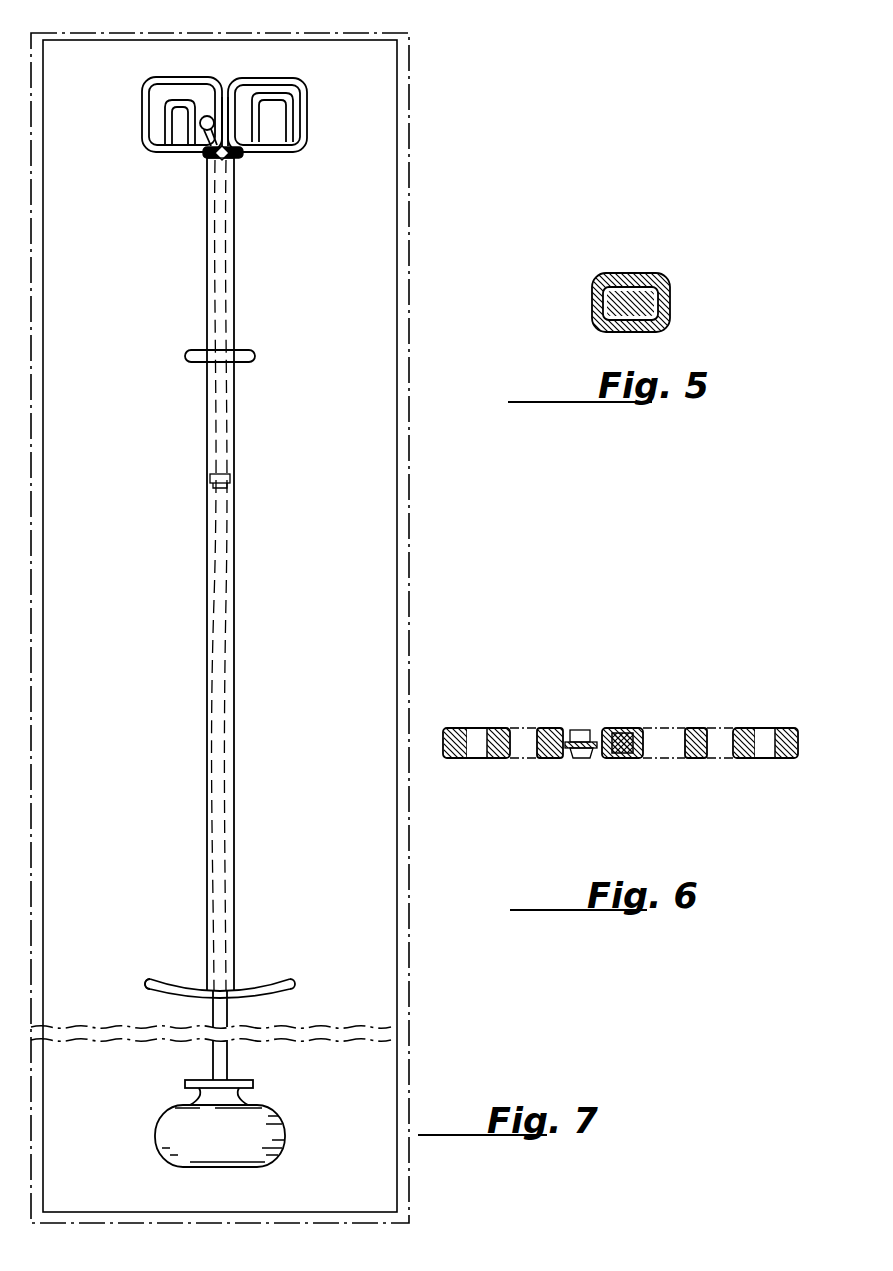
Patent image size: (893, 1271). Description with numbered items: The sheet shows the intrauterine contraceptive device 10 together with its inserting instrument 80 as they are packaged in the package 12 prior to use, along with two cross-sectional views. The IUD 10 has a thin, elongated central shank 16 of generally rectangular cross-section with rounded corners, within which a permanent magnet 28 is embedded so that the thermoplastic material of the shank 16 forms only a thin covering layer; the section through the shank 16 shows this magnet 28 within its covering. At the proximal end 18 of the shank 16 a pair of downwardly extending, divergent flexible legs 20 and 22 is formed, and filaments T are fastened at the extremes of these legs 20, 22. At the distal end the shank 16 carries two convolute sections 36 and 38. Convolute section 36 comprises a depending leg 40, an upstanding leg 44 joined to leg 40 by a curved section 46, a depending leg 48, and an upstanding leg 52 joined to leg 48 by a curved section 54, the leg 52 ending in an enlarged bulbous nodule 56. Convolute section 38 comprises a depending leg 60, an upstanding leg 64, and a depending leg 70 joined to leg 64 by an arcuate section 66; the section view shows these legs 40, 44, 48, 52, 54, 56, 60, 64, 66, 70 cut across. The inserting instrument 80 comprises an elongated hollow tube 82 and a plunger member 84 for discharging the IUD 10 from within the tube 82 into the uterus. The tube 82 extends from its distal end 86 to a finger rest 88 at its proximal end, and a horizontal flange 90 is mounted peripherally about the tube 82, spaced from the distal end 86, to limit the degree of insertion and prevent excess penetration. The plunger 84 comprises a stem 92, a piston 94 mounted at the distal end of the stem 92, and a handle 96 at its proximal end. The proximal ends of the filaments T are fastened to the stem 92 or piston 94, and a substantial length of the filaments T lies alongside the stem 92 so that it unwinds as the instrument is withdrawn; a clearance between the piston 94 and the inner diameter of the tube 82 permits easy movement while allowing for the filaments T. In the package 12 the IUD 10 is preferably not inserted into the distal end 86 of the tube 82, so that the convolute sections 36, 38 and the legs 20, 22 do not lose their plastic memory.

In FIG. 7, the intrauterine contraceptive device 10 is at (236, 117).
In FIG. 7, the package 12 is at (404, 567).
In FIG. 7, the shank 16 is at (223, 118).
In FIG. 6, the shank 16 is at (632, 752).
In FIG. 7, the proximal end 18 is at (228, 133).
In FIG. 7, the leg 20 is at (236, 151).
In FIG. 7, the leg 22 is at (215, 148).
In FIG. 6, the permanent magnet 28 is at (623, 737).
In FIG. 7, the convolute section 36 is at (140, 119).
In FIG. 6, the convolute section 36 is at (475, 745).
In FIG. 7, the convolute section 38 is at (300, 115).
In FIG. 6, the convolute section 38 is at (753, 762).
In FIG. 6, the depending leg 40 is at (457, 728).
In FIG. 6, the upstanding leg 44 is at (500, 728).
In FIG. 6, the curved section 46 is at (477, 750).
In FIG. 6, the depending leg 48 is at (546, 728).
In FIG. 6, the upstanding leg 52 is at (575, 730).
In FIG. 6, the curved section 54 is at (568, 750).
In FIG. 6, the nodule 56 is at (583, 741).
In FIG. 6, the depending leg 60 is at (787, 728).
In FIG. 6, the upstanding leg 64 is at (741, 740).
In FIG. 6, the arcuate section 66 is at (765, 735).
In FIG. 6, the depending leg 70 is at (696, 728).
In FIG. 7, the inserting instrument 80 is at (241, 662).
In FIG. 7, the tube 82 is at (241, 574).
In FIG. 5, the tube 82 is at (670, 302).
In FIG. 7, the plunger member 84 is at (225, 959).
In FIG. 7, the distal end 86 is at (210, 160).
In FIG. 7, the finger rest 88 is at (152, 978).
In FIG. 7, the horizontal flange 90 is at (255, 352).
In FIG. 7, the stem 92 is at (228, 560).
In FIG. 7, the piston 94 is at (232, 480).
In FIG. 7, the handle 96 is at (273, 1133).
In FIG. 7, the filaments T is at (223, 256).